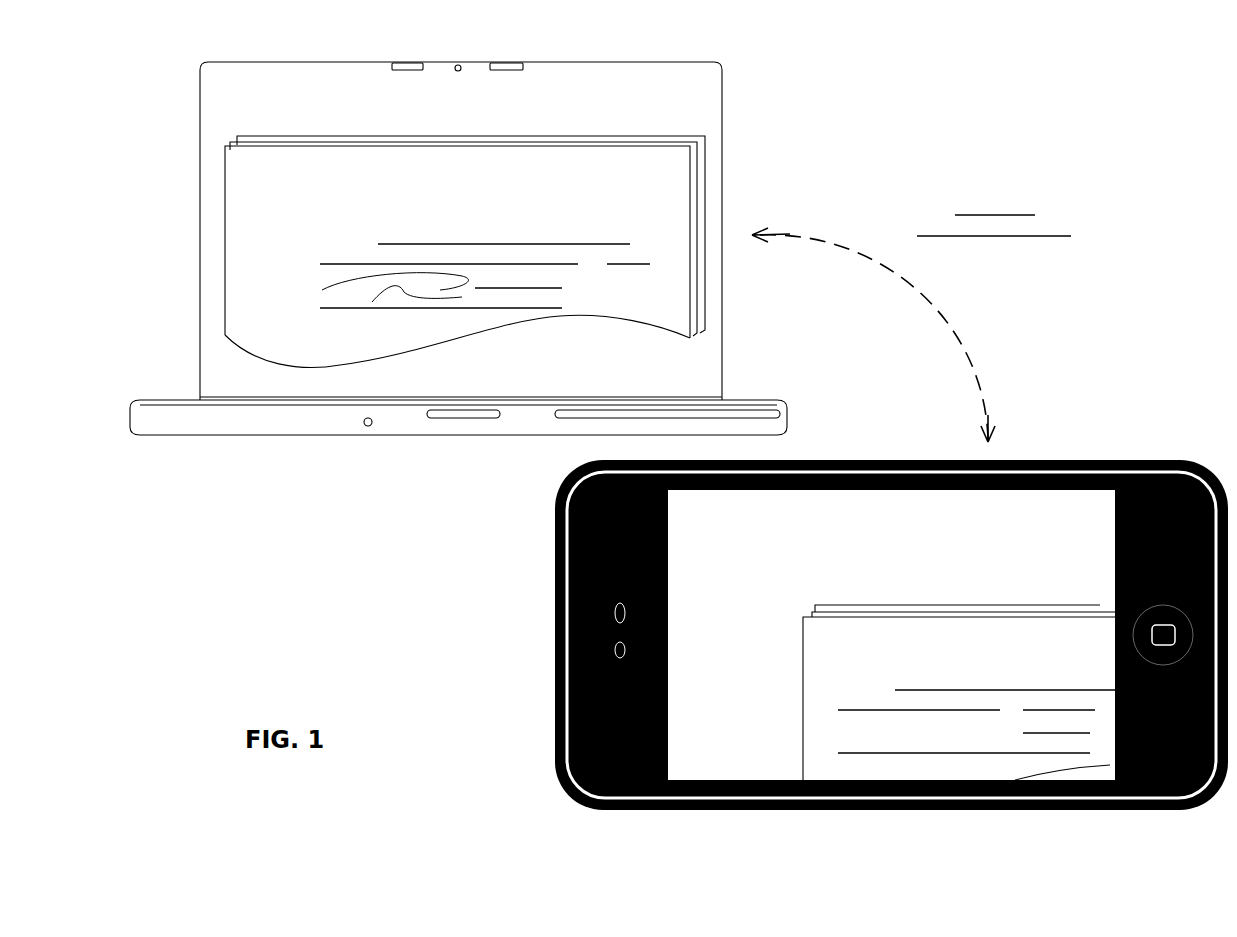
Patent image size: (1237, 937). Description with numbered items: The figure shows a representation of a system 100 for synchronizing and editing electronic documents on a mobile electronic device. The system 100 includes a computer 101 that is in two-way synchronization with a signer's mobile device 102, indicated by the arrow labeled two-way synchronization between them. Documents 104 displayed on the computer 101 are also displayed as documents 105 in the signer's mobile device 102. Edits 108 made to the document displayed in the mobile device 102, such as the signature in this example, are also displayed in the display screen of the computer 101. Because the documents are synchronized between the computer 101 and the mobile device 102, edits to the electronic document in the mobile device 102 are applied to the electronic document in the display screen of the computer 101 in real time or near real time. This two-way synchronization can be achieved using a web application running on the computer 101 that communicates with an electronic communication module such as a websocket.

The system 100 is at (1131, 101).
The computer 101 is at (528, 50).
The mobile device 102 is at (851, 528).
The documents 104 is at (687, 142).
The documents 105 is at (1040, 617).
The edits 108 is at (838, 728).